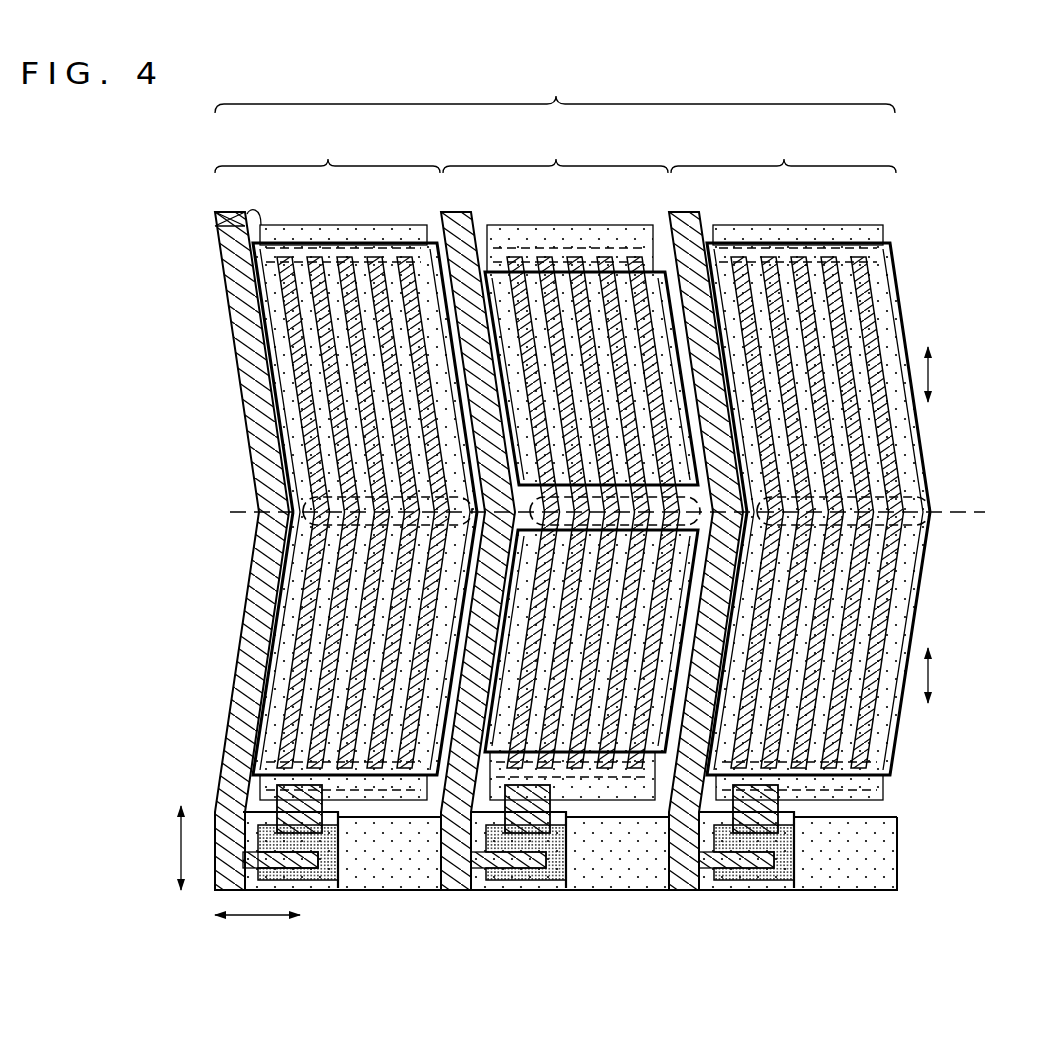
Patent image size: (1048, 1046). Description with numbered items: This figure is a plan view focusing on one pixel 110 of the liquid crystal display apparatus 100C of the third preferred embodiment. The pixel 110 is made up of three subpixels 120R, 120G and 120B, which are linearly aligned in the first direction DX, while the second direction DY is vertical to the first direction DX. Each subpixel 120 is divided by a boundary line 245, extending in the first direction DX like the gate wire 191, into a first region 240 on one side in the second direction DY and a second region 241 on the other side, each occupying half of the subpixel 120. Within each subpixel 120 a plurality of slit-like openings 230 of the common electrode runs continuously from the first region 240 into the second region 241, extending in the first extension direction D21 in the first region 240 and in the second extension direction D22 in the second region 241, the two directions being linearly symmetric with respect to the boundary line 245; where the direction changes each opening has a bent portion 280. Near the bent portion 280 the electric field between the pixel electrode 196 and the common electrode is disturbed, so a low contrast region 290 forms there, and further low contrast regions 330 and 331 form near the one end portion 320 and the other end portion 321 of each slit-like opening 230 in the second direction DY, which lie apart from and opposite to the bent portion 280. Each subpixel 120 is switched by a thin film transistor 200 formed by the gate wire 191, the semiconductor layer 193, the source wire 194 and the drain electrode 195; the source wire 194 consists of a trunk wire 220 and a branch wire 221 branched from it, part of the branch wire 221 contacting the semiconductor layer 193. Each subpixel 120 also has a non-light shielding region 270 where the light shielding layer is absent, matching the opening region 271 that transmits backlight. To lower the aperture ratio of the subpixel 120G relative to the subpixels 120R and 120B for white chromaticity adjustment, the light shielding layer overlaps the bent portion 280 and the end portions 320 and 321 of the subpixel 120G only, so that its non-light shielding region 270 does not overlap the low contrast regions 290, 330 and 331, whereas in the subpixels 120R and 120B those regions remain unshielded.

The liquid crystal display apparatus 100C is at (950, 107).
The pixel 110 is at (555, 92).
The subpixel 120R is at (327, 149).
The subpixel 120G is at (555, 149).
The subpixel 120B is at (783, 149).
The subpixel 120 is at (327, 149).
The pixel electrode 196 is at (216, 226).
The non-light shielding region 270 is at (515, 509).
The opening region 271 is at (262, 290).
The first region 240 is at (268, 350).
The slit-like opening 230 is at (293, 382).
The bent portion 280 is at (303, 498).
The low contrast region 290 is at (318, 537).
The second region 241 is at (284, 578).
The boundary line 245 is at (957, 512).
The source wire 194 is at (112, 697).
The trunk wire 220 is at (227, 732).
The branch wire 221 is at (258, 858).
The semiconductor layer 193 is at (333, 872).
The drain electrode 195 is at (314, 833).
The thin film transistor 200 is at (350, 835).
The gate wire 191 is at (402, 877).
The end portion 320 is at (572, 268).
The end portion 321 is at (570, 772).
The low contrast region 330 is at (633, 243).
The low contrast region 331 is at (627, 780).
The first extension direction D21 is at (952, 374).
The second extension direction D22 is at (952, 675).
The first direction DX is at (257, 933).
The second direction DY is at (162, 848).